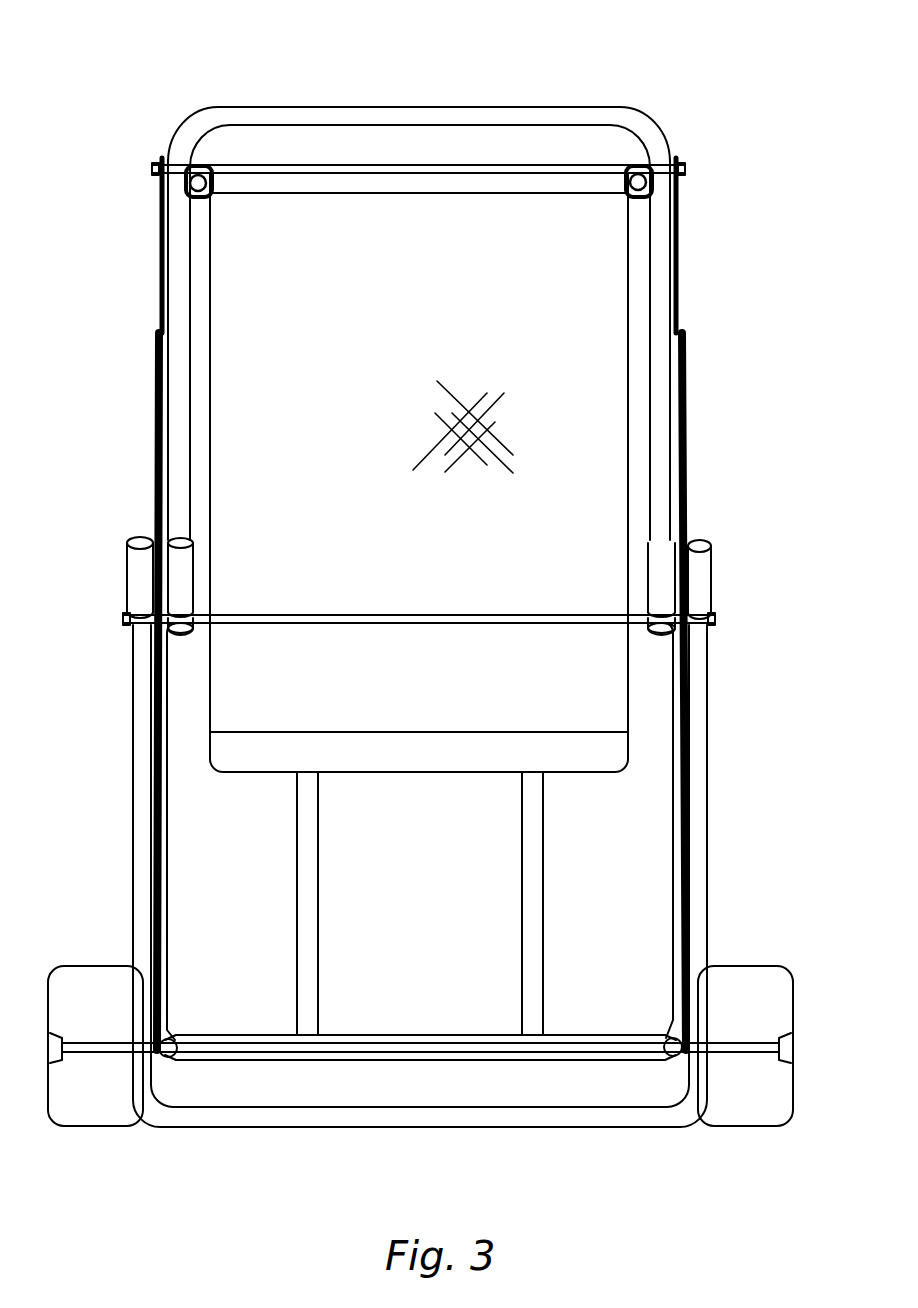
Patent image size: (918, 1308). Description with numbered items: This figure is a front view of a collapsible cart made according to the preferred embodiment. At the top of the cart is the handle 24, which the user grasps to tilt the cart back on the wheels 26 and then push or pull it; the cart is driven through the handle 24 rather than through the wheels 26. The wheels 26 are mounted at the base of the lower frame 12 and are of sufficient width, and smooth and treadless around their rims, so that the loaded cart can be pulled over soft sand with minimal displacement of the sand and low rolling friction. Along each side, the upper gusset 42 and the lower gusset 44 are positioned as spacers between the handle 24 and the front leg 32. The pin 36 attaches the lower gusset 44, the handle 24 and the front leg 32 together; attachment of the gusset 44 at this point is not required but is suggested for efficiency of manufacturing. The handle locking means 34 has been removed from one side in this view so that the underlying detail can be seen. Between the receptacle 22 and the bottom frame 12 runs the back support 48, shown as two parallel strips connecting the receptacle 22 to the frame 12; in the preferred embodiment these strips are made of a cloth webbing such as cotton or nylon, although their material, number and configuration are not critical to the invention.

The lower frame 12 is at (462, 1033).
The receptacle 22 is at (400, 773).
The handle 24 is at (440, 107).
The wheels 26 is at (105, 1127).
The front leg 32 is at (710, 798).
The handle locking means 34 is at (127, 570).
The pin 36 is at (715, 617).
The upper gusset 42 is at (680, 245).
The lower gusset 44 is at (685, 468).
The back support 48 is at (318, 888).